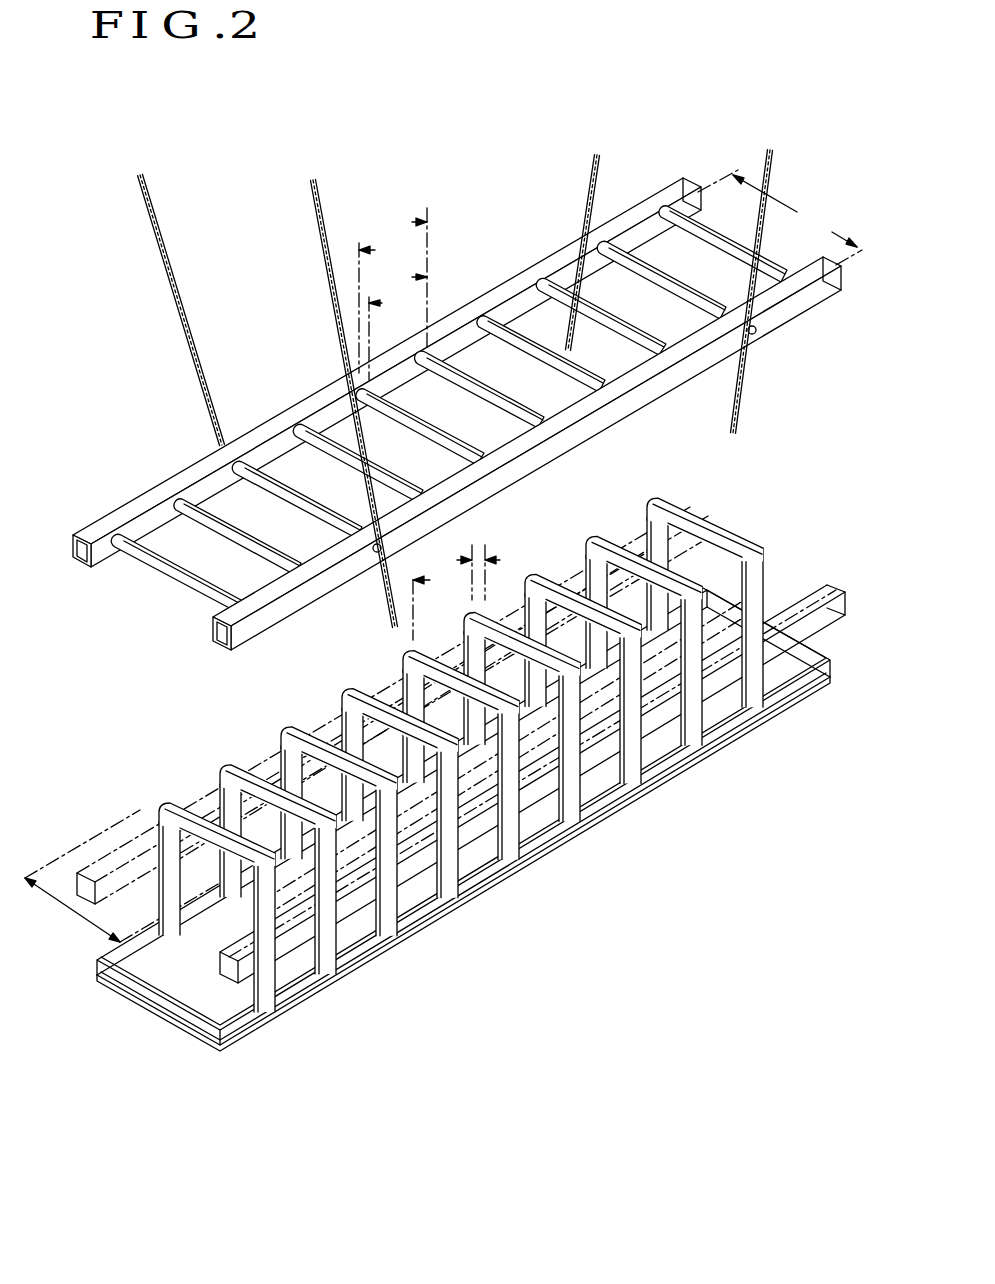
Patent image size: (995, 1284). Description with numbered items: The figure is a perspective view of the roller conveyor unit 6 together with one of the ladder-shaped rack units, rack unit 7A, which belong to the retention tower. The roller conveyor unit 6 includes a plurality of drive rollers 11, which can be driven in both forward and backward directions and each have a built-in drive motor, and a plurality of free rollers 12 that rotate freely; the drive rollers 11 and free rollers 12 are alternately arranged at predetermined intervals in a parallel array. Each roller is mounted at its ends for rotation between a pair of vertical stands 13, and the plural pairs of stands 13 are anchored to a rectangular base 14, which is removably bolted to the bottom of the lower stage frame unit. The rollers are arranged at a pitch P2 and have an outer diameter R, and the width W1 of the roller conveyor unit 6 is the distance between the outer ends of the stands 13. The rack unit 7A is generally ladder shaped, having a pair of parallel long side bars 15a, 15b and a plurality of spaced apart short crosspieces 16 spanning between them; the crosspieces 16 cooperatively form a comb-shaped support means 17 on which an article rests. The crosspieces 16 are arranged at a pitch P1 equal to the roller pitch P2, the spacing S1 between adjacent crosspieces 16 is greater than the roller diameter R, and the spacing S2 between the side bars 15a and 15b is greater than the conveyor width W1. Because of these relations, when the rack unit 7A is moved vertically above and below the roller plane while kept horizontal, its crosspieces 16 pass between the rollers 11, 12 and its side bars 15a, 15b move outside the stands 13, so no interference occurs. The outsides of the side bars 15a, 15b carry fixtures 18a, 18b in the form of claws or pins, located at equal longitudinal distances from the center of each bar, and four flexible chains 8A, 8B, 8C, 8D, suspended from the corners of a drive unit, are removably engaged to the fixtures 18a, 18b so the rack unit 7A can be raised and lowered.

The roller conveyor unit 6 is at (435, 771).
The rack unit 7A is at (437, 442).
The flexible chain 8A is at (333, 297).
The flexible chain 8B is at (747, 380).
The flexible chain 8C is at (178, 313).
The flexible chain 8D is at (590, 183).
The drive roller 11 is at (420, 750).
The free roller 12 is at (597, 540).
The vertical stand 13 is at (220, 785).
The rectangular base 14 is at (233, 1028).
The long side bar 15a is at (658, 383).
The long side bar 15b is at (498, 293).
The crosspiece 16 is at (447, 453).
The comb-shaped support means 17 is at (173, 585).
The fixture 18a is at (372, 552).
The fixture 18b is at (757, 330).
The pitch of crosspieces P1 is at (393, 290).
The pitch of rollers P2 is at (430, 595).
The spacing between adjacent crosspieces S1 is at (398, 325).
The spacing between side bars S2 is at (780, 217).
The outer diameter of rollers R is at (484, 568).
The width of roller conveyor unit W1 is at (130, 876).